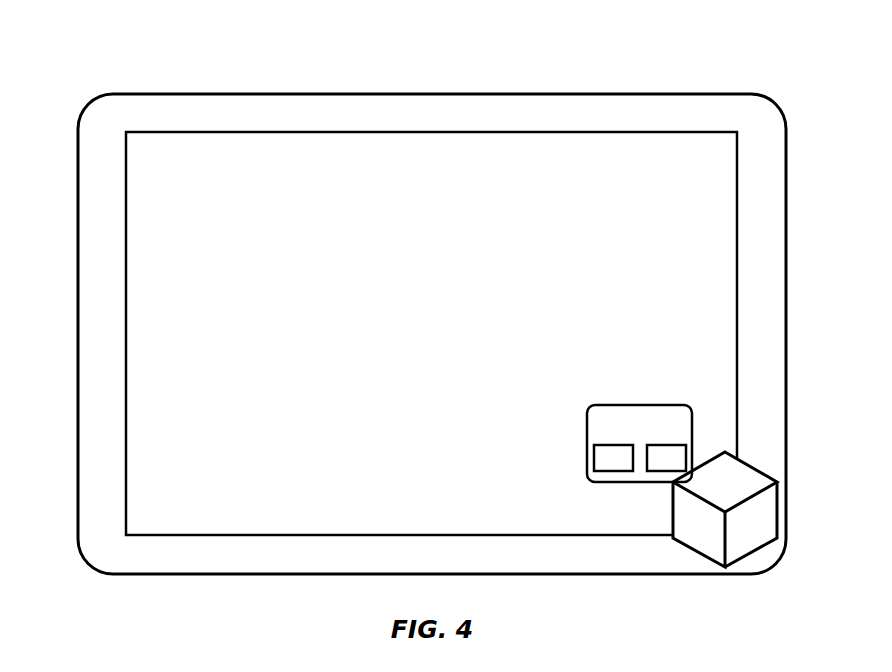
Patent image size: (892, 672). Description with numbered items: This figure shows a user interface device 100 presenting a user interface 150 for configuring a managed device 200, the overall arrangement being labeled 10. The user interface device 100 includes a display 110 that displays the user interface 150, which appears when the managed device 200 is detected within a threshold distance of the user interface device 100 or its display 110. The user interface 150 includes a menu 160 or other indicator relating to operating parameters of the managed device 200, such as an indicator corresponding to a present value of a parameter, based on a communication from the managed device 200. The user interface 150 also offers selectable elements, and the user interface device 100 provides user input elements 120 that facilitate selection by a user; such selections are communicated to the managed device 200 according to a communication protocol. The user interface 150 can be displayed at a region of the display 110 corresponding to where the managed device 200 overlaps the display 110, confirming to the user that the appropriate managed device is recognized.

The electronic device system 10 is at (305, 55).
The user interface device 100 is at (166, 96).
The display 110 is at (465, 131).
The user interface 150 is at (219, 220).
The menu 160 is at (650, 404).
The user input elements 120 is at (612, 472).
The managed device 200 is at (770, 471).